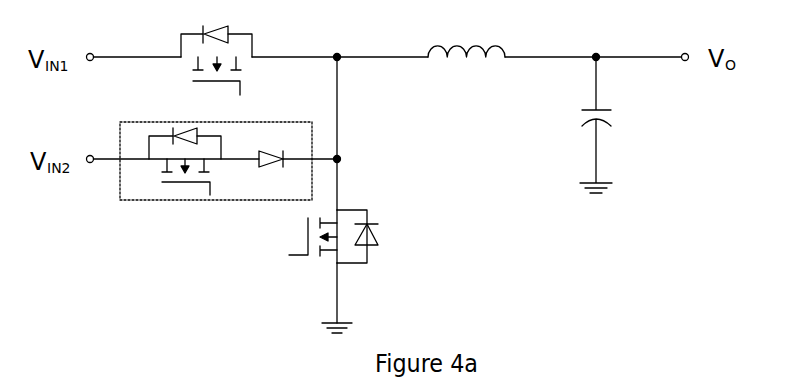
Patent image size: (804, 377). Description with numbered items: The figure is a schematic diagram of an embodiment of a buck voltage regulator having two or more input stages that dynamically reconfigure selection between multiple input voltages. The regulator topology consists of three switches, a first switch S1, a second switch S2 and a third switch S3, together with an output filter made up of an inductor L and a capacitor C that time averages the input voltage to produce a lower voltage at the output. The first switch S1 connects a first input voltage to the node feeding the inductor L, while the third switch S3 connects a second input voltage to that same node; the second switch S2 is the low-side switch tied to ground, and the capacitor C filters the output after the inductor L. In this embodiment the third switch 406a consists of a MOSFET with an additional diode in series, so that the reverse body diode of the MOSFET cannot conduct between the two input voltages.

The third switch 406a is at (216, 194).
The first switch S1 is at (216, 47).
The second switch S2 is at (353, 248).
The third switch S3 is at (194, 146).
The inductor L is at (466, 38).
The capacitor C is at (579, 125).